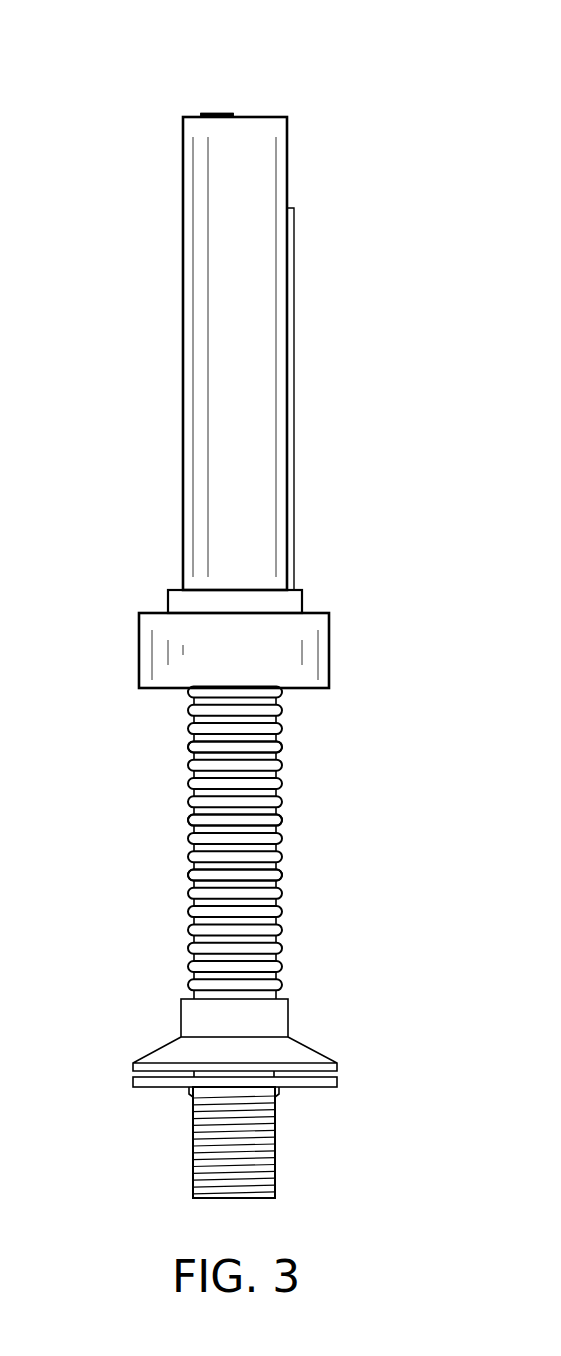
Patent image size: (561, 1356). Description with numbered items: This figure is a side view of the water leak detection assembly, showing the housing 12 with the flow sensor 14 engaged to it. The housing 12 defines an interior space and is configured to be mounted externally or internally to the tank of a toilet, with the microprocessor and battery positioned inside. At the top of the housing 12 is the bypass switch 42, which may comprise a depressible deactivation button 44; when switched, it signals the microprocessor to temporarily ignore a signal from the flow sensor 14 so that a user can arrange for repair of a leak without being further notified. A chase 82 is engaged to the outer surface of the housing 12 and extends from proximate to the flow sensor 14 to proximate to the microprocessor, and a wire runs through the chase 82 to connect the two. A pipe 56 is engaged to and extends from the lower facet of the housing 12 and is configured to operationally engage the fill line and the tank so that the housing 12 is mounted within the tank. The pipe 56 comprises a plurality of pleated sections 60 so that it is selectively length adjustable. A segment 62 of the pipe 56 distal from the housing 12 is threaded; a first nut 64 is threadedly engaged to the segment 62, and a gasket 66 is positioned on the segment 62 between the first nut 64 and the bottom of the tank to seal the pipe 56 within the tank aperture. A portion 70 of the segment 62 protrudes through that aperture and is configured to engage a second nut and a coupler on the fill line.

The housing 12 is at (170, 477).
The bypass switch 42 is at (217, 116).
The depressible deactivation button 44 is at (217, 116).
The chase 82 is at (307, 423).
The flow sensor 14 is at (274, 657).
The pipe 56 is at (176, 803).
The pleated sections 60 is at (292, 758).
The first nut 64 is at (280, 1021).
The gasket 66 is at (352, 1082).
The segment 62 is at (198, 1111).
The portion 70 is at (203, 1165).